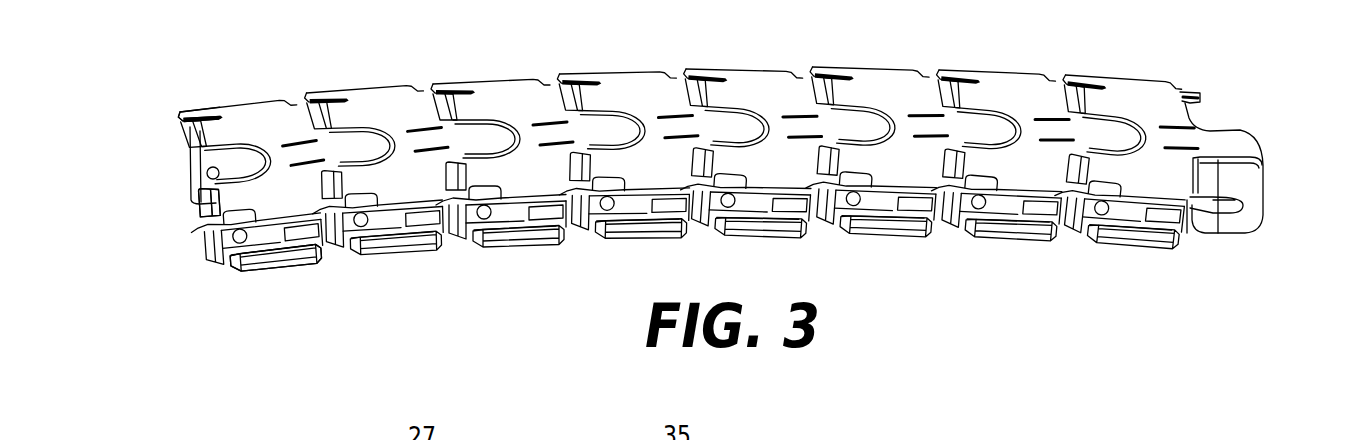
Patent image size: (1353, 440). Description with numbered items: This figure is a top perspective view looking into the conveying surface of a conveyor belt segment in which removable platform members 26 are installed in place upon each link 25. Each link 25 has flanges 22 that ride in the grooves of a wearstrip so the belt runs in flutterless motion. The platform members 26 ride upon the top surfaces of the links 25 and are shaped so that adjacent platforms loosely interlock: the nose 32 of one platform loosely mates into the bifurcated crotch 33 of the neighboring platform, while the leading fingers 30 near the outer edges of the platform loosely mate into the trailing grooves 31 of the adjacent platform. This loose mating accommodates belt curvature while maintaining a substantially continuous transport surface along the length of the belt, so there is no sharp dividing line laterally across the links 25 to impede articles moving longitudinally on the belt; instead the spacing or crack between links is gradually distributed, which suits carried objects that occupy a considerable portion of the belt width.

The flanges 22 is at (278, 257).
The link 25 is at (211, 247).
The removable platform member 26 is at (492, 92).
The leading finger 30 is at (1203, 97).
The trailing groove 31 is at (178, 123).
The nose 32 is at (1238, 137).
The crotch 33 is at (244, 163).